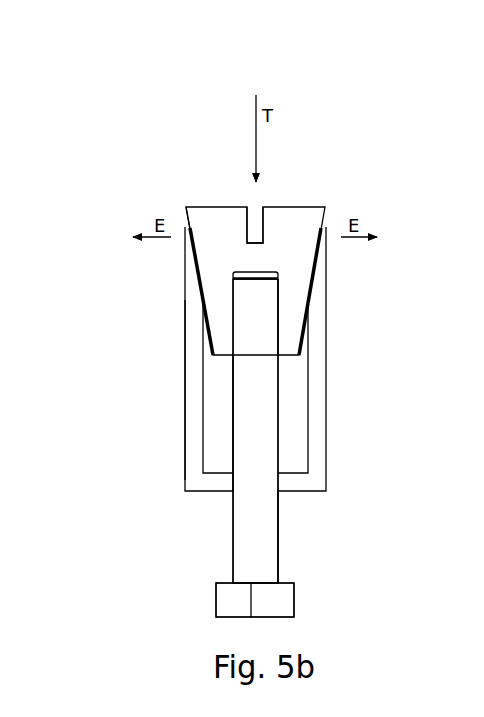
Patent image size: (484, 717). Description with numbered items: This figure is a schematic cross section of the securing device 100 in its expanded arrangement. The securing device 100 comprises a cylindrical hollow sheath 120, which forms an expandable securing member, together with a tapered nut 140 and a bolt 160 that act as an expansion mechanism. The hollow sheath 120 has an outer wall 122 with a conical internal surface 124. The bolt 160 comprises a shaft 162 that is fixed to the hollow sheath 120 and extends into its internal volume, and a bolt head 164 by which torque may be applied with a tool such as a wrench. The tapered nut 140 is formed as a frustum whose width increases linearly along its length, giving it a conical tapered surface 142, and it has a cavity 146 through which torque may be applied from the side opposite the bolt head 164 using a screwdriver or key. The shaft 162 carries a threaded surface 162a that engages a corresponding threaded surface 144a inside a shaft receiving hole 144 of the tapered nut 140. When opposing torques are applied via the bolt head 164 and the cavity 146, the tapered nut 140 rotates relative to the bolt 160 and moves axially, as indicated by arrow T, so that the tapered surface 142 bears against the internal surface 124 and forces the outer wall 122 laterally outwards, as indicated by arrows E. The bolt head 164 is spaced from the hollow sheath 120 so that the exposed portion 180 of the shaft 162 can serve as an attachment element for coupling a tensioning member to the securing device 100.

The securing device 100 is at (110, 622).
The hollow sheath 120 is at (303, 492).
The outer wall 122 is at (192, 407).
The internal surface 124 is at (196, 283).
The tapered nut 140 is at (220, 207).
The tapered surface 142 is at (206, 333).
The shaft receiving hole 144 is at (258, 272).
The threaded surface 144a is at (281, 318).
The cavity 146 is at (258, 215).
The bolt 160 is at (233, 552).
The shaft 162 is at (250, 493).
The threaded surface 162a is at (232, 437).
The bolt head 164 is at (283, 597).
The exposed portion 180 is at (281, 542).